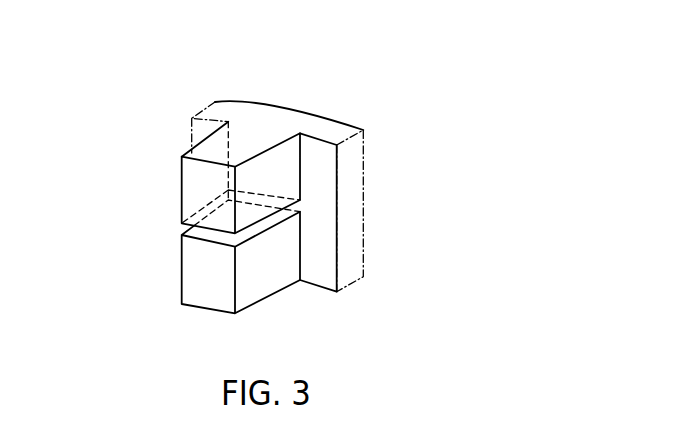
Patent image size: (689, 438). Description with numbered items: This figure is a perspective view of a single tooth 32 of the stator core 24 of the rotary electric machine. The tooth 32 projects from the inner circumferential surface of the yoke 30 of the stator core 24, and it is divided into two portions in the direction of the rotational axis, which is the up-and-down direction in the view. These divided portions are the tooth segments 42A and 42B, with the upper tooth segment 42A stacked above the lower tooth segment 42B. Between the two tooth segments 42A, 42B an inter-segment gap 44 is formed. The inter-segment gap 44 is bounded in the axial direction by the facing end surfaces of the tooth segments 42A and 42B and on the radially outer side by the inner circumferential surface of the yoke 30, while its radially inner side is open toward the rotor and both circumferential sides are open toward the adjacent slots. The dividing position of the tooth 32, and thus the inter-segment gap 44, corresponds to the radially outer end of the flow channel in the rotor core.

The stator core 24 is at (277, 85).
The yoke 30 is at (325, 128).
The tooth 32 is at (239, 141).
The tooth segment 42A is at (192, 182).
The tooth segment 42B is at (192, 260).
The inter-segment gap 44 is at (180, 228).